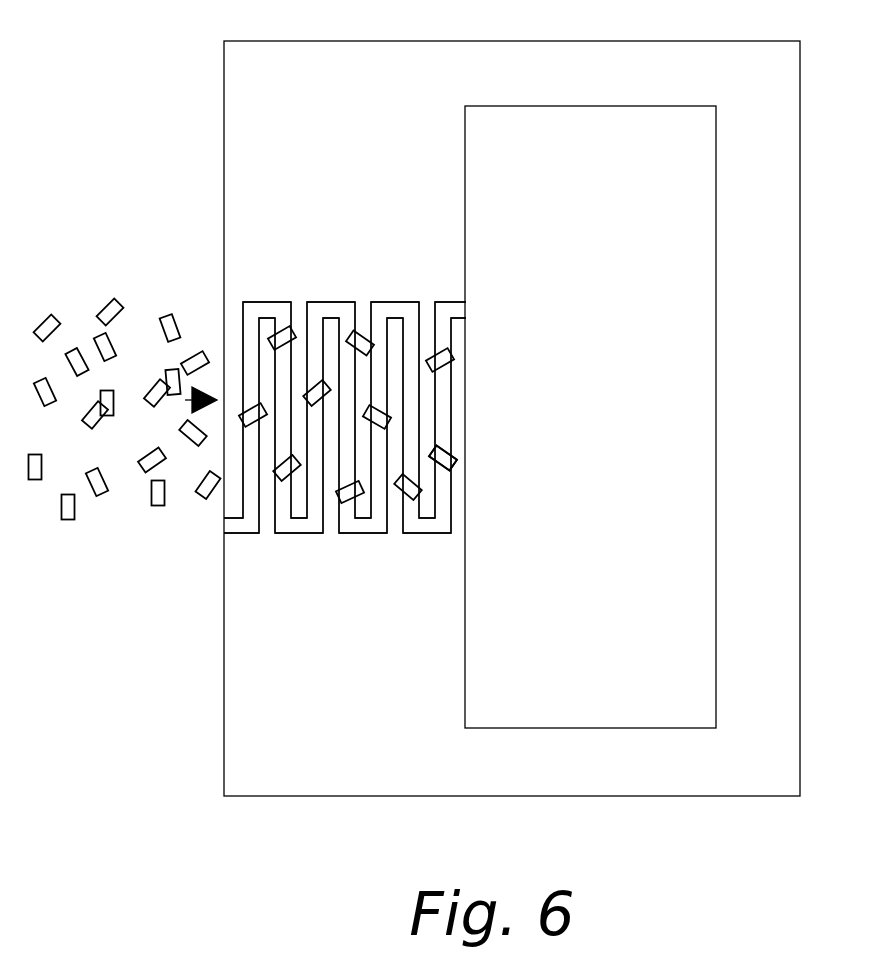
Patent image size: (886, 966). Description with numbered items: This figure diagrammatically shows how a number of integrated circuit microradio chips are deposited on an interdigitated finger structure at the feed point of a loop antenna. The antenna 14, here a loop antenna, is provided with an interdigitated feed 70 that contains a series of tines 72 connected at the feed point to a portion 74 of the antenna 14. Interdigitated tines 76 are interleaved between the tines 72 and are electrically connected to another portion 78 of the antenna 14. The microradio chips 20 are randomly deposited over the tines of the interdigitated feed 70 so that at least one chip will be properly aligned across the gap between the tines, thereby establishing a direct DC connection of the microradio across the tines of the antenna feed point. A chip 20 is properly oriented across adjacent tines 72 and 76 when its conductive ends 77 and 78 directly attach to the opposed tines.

The antenna 14 is at (800, 313).
The microradio chips 20 is at (222, 536).
The interdigitated feed 70 is at (411, 413).
The tines 72 is at (232, 315).
The portion of antenna 74 is at (361, 144).
The interdigitated tines 76 is at (460, 522).
The conductive end 77 is at (432, 448).
The portion of antenna 78 is at (365, 709).